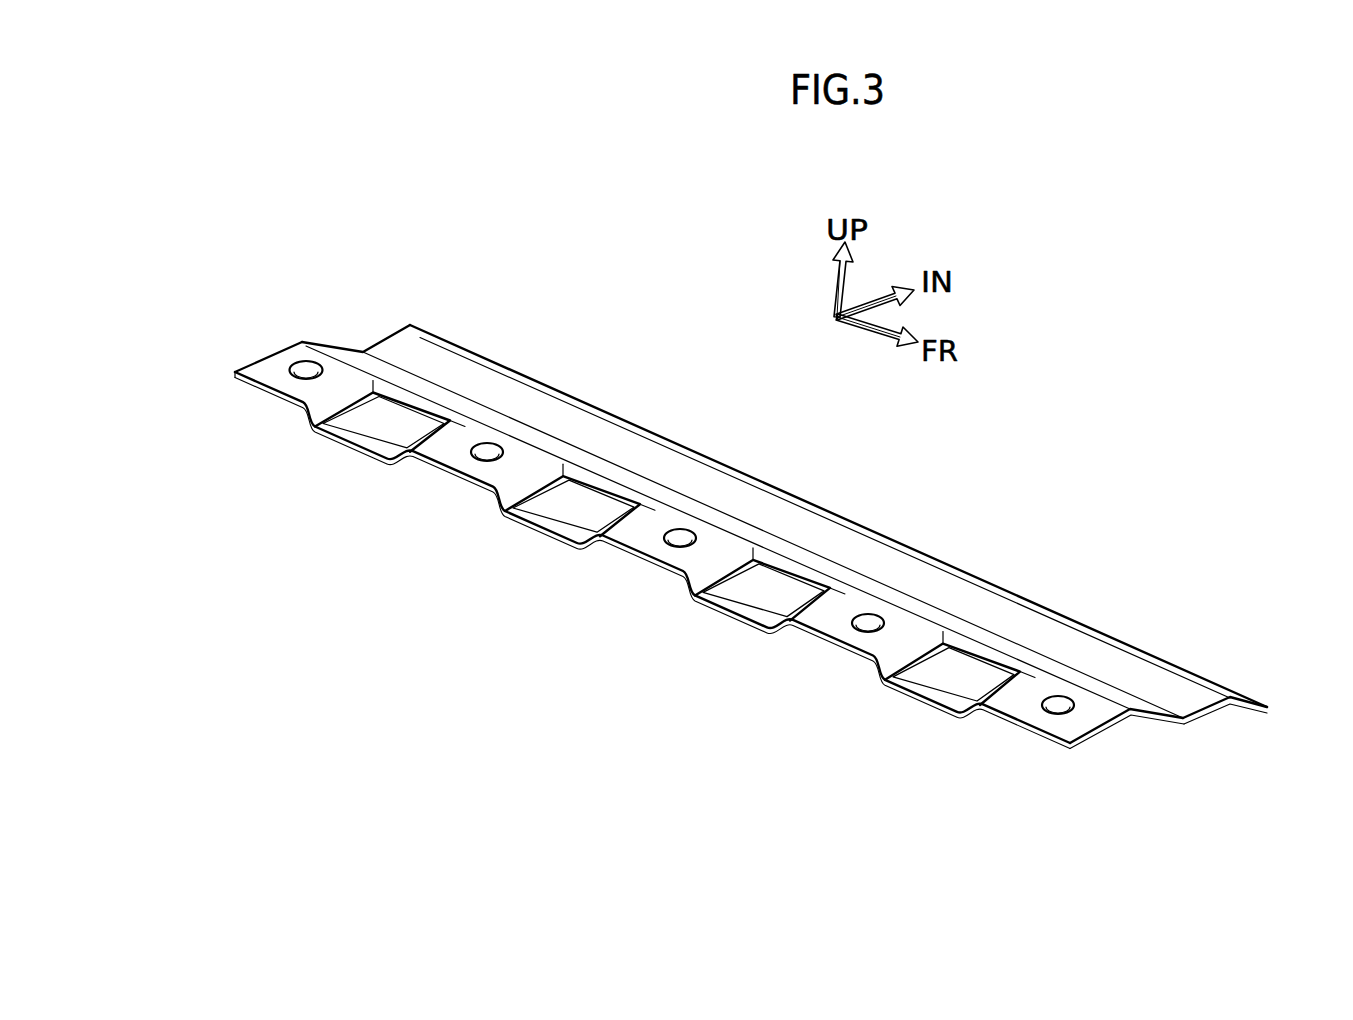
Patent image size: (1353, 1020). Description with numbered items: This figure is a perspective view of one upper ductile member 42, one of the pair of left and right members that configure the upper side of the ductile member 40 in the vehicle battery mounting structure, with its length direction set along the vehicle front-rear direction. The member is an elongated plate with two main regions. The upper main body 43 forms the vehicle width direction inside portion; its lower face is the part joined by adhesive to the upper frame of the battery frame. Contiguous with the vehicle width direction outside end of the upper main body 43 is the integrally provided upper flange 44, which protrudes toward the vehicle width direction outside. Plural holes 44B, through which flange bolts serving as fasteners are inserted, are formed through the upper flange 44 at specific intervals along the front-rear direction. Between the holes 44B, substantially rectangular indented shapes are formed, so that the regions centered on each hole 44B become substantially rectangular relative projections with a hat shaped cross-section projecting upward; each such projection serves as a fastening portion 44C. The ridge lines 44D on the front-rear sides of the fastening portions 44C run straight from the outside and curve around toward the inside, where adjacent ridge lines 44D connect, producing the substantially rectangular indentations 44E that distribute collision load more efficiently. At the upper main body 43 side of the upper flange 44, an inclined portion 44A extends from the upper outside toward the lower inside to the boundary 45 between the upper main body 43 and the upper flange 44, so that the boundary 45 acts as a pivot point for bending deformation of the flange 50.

The upper ductile member 42 is at (965, 490).
The ductile member 40 is at (703, 506).
The upper main body 43 is at (505, 357).
The boundary 45 is at (645, 477).
The upper flange 44 is at (270, 393).
The flange 50 is at (709, 545).
The inclined portion 44A is at (380, 370).
The hole 44B is at (1050, 712).
The fastening portion 44C is at (877, 640).
The ridge line 44D is at (575, 520).
The indentation 44E is at (372, 427).